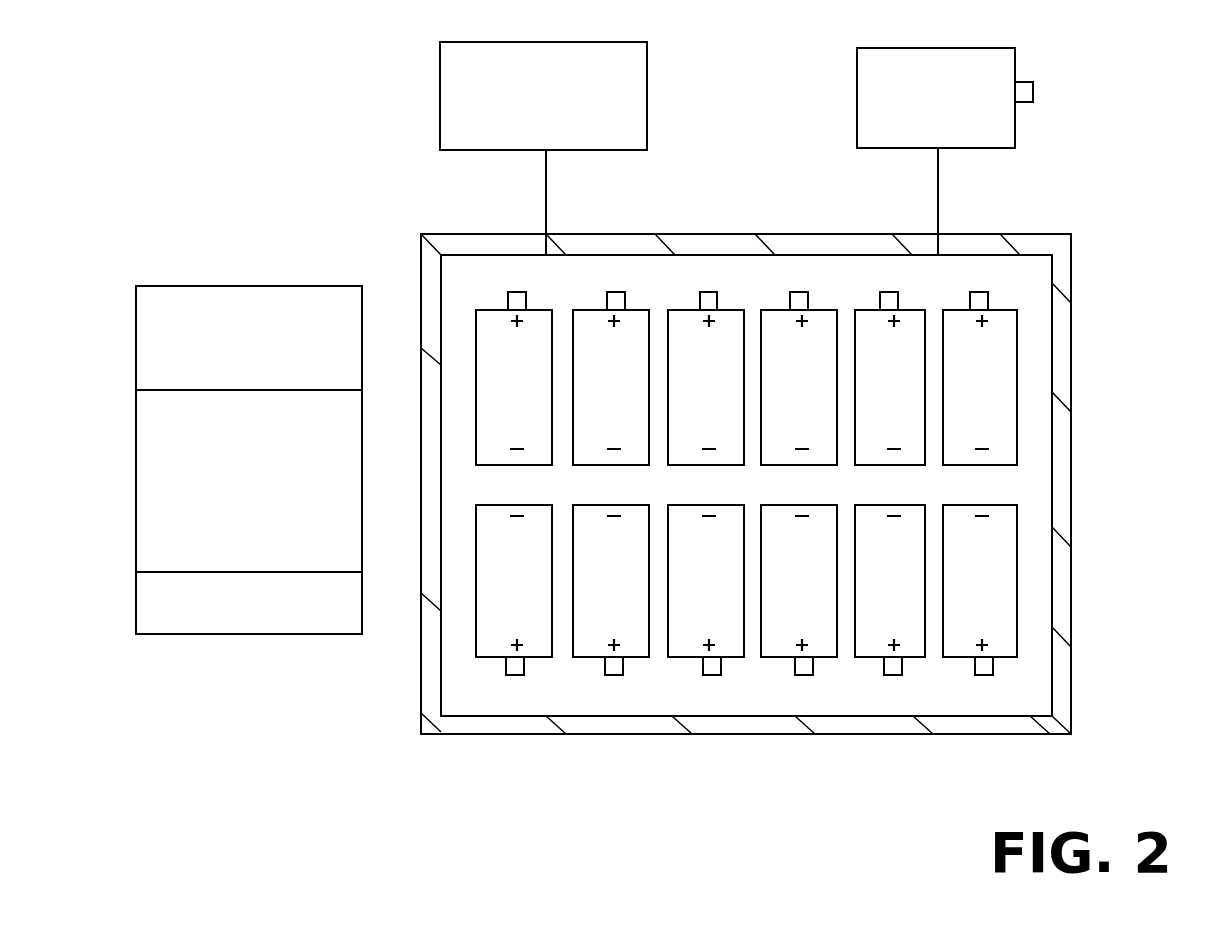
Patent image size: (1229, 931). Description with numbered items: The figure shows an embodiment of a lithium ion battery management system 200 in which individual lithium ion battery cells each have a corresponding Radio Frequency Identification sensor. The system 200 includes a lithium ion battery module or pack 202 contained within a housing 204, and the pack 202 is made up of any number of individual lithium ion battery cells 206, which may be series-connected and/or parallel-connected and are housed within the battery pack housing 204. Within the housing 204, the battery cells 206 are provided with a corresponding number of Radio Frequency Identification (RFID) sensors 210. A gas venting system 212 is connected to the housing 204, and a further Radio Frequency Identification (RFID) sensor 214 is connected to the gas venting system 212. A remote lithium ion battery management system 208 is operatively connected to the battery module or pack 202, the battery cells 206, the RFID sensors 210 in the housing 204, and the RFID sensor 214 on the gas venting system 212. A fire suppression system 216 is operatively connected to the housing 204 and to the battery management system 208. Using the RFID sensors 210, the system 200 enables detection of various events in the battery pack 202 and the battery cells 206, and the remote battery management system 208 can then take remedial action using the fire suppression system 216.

The lithium ion battery management system 200 is at (300, 84).
The lithium ion battery module or pack 202 is at (1102, 402).
The housing 204 is at (796, 484).
The lithium ion battery cell 206 is at (498, 398).
The remote lithium ion battery management system 208 is at (249, 416).
The Radio Frequency Identification (RFID) sensor 210 is at (623, 290).
The gas venting system 212 is at (912, 48).
The Radio Frequency Identification (RFID) sensor 214 is at (1090, 79).
The fire suppression system 216 is at (583, 40).